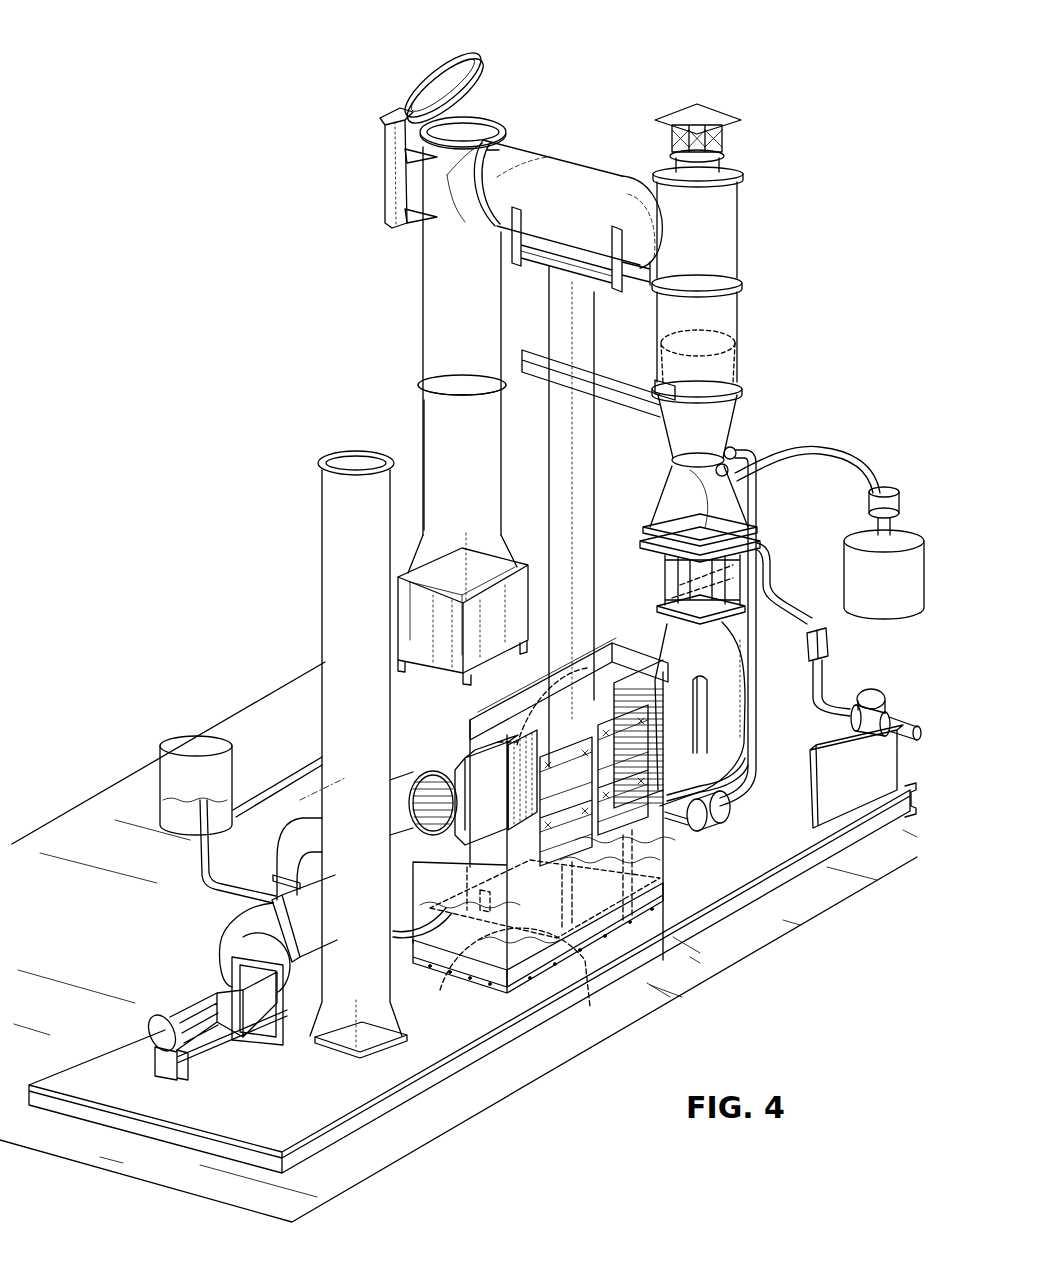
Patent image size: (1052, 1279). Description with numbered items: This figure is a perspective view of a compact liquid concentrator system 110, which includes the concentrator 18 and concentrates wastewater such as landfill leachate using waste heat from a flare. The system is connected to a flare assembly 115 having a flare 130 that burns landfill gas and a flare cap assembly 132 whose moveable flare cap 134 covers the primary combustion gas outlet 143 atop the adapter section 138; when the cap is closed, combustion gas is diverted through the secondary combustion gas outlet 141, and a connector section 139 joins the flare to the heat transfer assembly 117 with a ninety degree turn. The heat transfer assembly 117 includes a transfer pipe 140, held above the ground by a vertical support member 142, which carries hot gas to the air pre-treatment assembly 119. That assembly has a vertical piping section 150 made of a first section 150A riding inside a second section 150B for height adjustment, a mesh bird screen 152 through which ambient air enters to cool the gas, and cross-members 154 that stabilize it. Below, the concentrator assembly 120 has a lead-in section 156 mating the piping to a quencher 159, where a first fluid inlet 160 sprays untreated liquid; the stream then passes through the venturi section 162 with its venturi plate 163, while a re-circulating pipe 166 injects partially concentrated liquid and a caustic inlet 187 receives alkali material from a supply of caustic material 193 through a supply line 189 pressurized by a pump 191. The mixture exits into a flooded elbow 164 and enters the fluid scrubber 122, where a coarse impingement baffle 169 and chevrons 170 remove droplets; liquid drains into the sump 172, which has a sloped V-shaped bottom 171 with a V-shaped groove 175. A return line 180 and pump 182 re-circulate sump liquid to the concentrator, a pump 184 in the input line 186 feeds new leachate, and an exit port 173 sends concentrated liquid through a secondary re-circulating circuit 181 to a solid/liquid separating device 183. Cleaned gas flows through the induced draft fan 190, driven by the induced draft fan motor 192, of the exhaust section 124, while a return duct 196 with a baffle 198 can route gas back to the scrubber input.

The concentrator 18 is at (856, 398).
The compact liquid concentrator system 110 is at (642, 46).
The flare assembly 115 is at (368, 328).
The heat transfer assembly 117 is at (615, 138).
The air pre-treatment assembly 119 is at (768, 273).
The concentrator assembly 120 is at (782, 524).
The fluid scrubber 122 is at (672, 849).
The exhaust section 124 is at (312, 795).
The flare 130 is at (428, 401).
The flare cap assembly 132 is at (390, 94).
The flare cap 134 is at (466, 50).
The adapter section 138 is at (448, 335).
The connector section 139 is at (494, 160).
The transfer pipe 140 is at (545, 206).
The secondary combustion gas outlet 141 is at (500, 176).
The support member 142 is at (552, 444).
The primary combustion gas outlet 143 is at (490, 117).
The vertical piping section 150 is at (688, 248).
The first section 150A is at (746, 356).
The second section 150B is at (746, 320).
The mesh bird screen 152 is at (725, 140).
The cross-members 154 is at (625, 332).
The lead-in section 156 is at (682, 431).
The quencher 159 is at (663, 523).
The first fluid inlet 160 is at (742, 458).
The venturi section 162 is at (660, 578).
The venturi plate 163 is at (733, 606).
The flooded elbow 164 is at (710, 725).
The re-circulating pipe 166 is at (746, 550).
The coarse impingement baffle 169 is at (618, 700).
The chevrons 170 is at (553, 692).
The V-shaped bottom 171 is at (588, 1000).
The sump 172 is at (662, 874).
The exit port 173 is at (745, 765).
The V-shaped groove 175 is at (452, 922).
The return line 180 is at (758, 787).
The secondary re-circulating circuit 181 is at (300, 758).
The pump 182 is at (718, 816).
The solid/liquid separating device 183 is at (177, 742).
The pump 184 is at (873, 690).
The input line 186 is at (824, 676).
The caustic inlet 187 is at (716, 469).
The supply line 189 is at (856, 460).
The induced draft fan 190 is at (228, 936).
The pump 191 is at (896, 511).
The induced draft fan motor 192 is at (176, 1004).
The supply of caustic material 193 is at (905, 600).
The return duct 196 is at (537, 690).
The baffle 198 is at (425, 770).